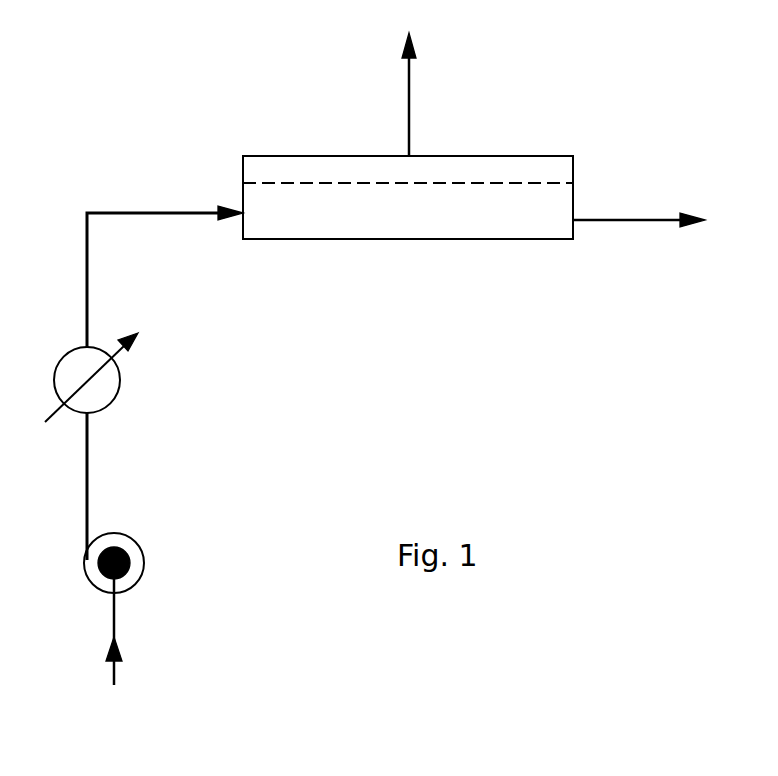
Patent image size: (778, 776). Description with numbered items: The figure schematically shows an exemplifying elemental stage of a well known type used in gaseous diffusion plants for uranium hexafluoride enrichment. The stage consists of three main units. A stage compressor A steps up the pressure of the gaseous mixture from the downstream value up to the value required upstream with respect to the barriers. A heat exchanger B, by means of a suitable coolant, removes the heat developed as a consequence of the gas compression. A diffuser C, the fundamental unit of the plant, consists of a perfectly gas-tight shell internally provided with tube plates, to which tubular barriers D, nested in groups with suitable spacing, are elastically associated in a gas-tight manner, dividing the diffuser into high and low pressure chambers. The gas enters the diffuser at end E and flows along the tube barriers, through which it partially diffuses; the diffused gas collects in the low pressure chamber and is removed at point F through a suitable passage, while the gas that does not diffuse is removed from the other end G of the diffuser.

The stage compressor A is at (143, 572).
The heat exchanger B is at (111, 397).
The diffuser C is at (540, 157).
The tubular barriers D is at (310, 183).
The diffuser inlet end E is at (86, 256).
The diffused gas removal point F is at (410, 83).
The undiffused gas outlet end G is at (632, 222).